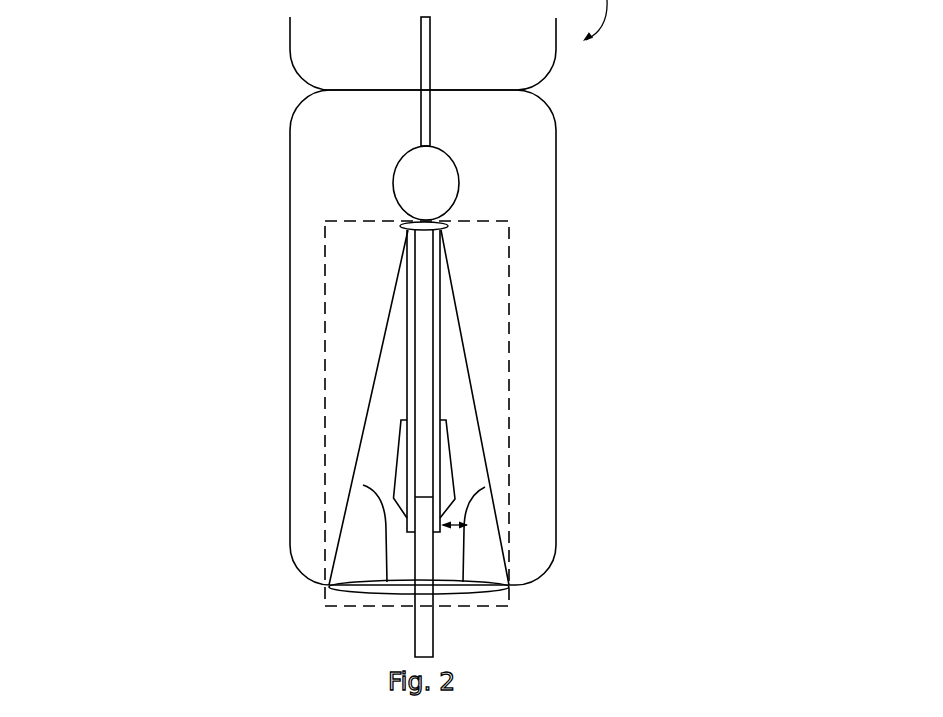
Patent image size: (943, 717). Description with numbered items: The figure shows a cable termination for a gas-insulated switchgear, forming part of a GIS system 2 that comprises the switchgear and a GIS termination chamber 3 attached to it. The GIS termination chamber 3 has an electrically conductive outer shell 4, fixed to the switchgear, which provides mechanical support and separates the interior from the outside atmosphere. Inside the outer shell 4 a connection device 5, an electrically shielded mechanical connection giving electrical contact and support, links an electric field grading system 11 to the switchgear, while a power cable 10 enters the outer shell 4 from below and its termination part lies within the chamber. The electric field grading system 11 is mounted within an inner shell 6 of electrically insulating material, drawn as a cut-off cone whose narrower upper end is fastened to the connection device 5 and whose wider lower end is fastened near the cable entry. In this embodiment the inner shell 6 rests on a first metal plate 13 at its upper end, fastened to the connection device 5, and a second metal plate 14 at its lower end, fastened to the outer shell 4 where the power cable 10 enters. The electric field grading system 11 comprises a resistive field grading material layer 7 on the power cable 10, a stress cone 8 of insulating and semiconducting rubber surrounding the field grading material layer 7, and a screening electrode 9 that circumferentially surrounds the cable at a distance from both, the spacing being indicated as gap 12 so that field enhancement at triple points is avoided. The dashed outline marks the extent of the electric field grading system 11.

The GIS system 2 is at (157, 92).
The GIS termination chamber 3 is at (265, 273).
The outer shell 4 is at (558, 146).
The connection device 5 is at (462, 193).
The inner shell 6 is at (468, 348).
The field grading material layer 7 is at (448, 380).
The stress cone 8 is at (456, 453).
The screening electrode 9 is at (468, 555).
The power cable 10 is at (428, 638).
The electric field grading system 11 is at (325, 333).
The gap 12 is at (467, 522).
The first metal plate 13 is at (424, 222).
The second metal plate 14 is at (362, 590).